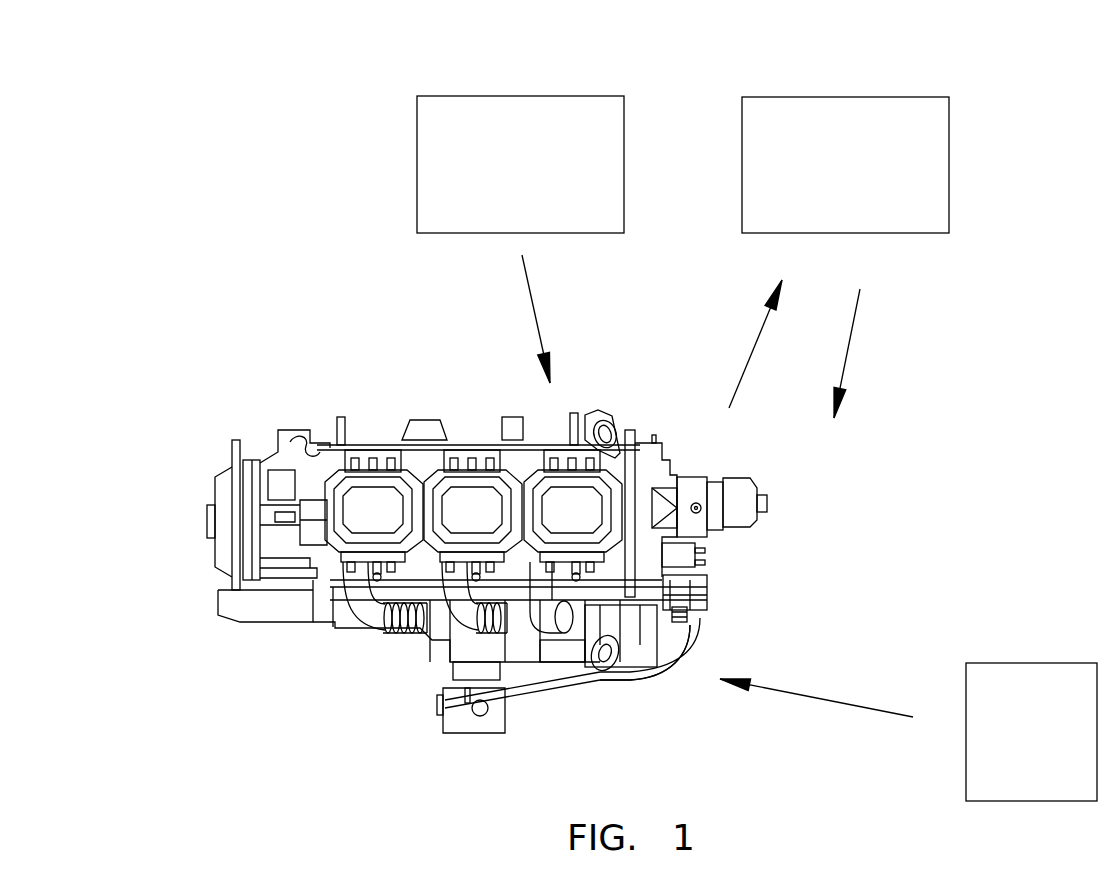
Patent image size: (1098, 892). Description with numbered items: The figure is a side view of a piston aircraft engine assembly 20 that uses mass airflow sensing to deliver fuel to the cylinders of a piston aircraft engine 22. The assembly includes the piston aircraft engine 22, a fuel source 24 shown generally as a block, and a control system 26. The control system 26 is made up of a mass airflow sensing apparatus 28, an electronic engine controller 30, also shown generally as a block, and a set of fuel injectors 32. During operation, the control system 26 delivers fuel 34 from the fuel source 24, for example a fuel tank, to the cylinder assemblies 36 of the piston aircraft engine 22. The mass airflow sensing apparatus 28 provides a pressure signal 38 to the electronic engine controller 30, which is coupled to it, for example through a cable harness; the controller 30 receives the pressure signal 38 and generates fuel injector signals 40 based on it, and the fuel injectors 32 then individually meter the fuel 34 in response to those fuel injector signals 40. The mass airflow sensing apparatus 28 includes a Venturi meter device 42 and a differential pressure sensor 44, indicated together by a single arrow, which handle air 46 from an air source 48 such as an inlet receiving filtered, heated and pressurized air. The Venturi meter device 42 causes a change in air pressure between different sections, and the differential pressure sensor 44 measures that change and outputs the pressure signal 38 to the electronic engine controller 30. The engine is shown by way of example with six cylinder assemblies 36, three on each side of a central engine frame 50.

The piston aircraft engine assembly 20 is at (247, 152).
The piston aircraft engine 22 is at (212, 378).
The fuel source 24 is at (505, 173).
The control system 26 is at (1012, 98).
The mass airflow sensing apparatus 28 is at (575, 655).
The electronic engine controller 30 is at (831, 173).
The fuel injectors 32 is at (558, 633).
The fuel 34 is at (527, 277).
The cylinder assemblies 36 is at (570, 483).
The pressure signal 38 is at (745, 362).
The fuel injector signals 40 is at (853, 325).
The Venturi meter device 42 is at (662, 631).
The differential pressure sensor 44 is at (697, 652).
The air 46 is at (830, 698).
The air source 48 is at (1055, 747).
The central engine frame 50 is at (314, 484).